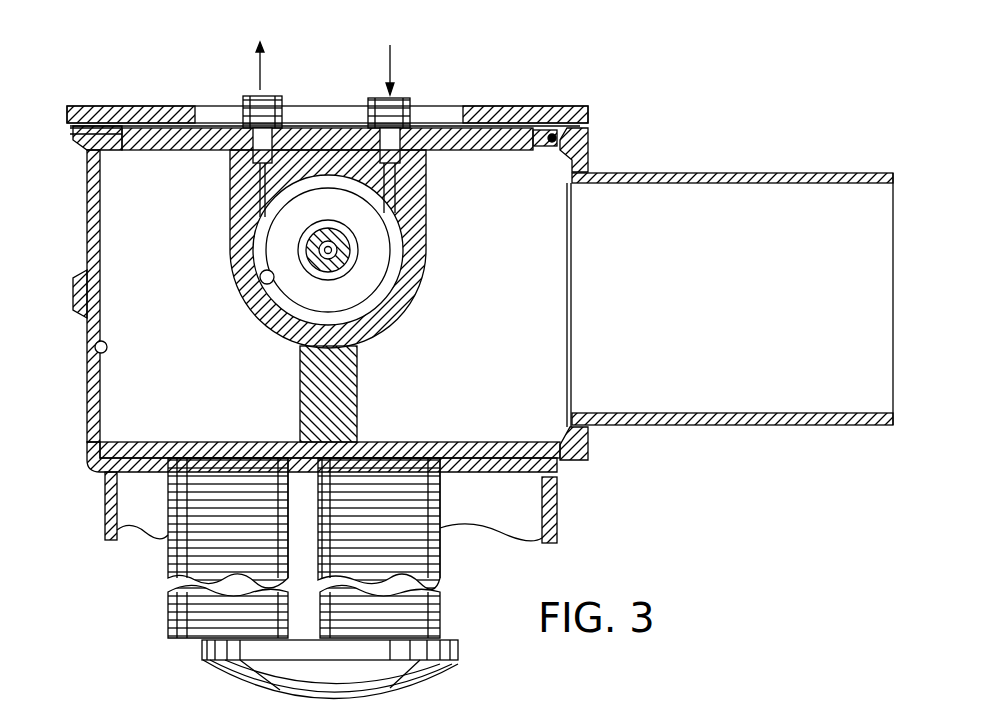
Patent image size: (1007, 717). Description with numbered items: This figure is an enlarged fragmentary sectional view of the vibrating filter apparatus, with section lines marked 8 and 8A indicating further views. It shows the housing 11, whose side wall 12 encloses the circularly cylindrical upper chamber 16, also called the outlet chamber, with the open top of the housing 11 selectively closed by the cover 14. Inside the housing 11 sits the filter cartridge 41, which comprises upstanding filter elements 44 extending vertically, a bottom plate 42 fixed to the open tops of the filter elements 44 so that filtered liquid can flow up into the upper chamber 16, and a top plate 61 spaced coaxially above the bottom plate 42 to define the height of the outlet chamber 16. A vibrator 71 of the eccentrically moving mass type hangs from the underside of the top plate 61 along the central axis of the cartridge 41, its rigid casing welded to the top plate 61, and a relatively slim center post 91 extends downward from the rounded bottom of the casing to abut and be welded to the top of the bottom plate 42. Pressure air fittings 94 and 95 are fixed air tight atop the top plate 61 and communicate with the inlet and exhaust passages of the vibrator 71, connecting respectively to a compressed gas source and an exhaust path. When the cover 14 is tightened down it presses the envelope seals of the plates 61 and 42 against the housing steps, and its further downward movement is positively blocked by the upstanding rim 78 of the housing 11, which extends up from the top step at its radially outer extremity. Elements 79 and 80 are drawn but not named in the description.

The section line 8- 8 is at (618, 22).
The section line 8A- 8A is at (72, 147).
The housing 11 is at (82, 420).
The side wall 12 is at (84, 376).
The cover 14 is at (125, 106).
The upper chamber 16 is at (97, 352).
The filter cartridge 41 is at (158, 608).
The bottom plate 42 is at (148, 441).
The filter element 44 is at (167, 552).
The top plate 61 is at (458, 150).
The vibrator 71 is at (428, 247).
The rim 78 is at (578, 142).
The corner member 79 is at (536, 445).
The seal 80 is at (548, 126).
The center post 91 is at (312, 370).
The pressure air fitting 94 is at (282, 108).
The pressure air fitting 95 is at (412, 108).